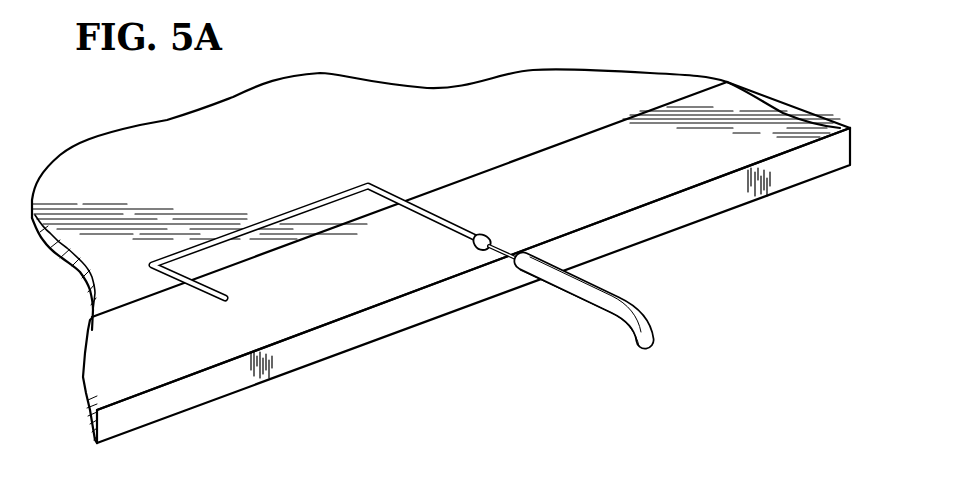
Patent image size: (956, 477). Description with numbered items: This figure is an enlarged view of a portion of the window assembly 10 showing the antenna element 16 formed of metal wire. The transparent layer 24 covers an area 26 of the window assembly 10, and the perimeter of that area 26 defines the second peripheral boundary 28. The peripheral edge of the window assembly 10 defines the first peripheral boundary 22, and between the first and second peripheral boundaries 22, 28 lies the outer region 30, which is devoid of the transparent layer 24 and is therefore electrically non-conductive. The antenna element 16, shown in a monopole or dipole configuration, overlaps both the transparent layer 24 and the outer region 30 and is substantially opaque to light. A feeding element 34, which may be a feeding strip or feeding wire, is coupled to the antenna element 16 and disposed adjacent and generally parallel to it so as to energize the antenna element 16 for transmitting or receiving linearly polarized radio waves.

The window assembly 10 is at (433, 240).
The antenna element 16 is at (322, 200).
The first peripheral boundary 22 is at (152, 388).
The transparent layer 24 is at (100, 250).
The area 26 is at (127, 155).
The second peripheral boundary 28 is at (120, 306).
The outer region 30 is at (740, 118).
The feeding element 34 is at (615, 308).